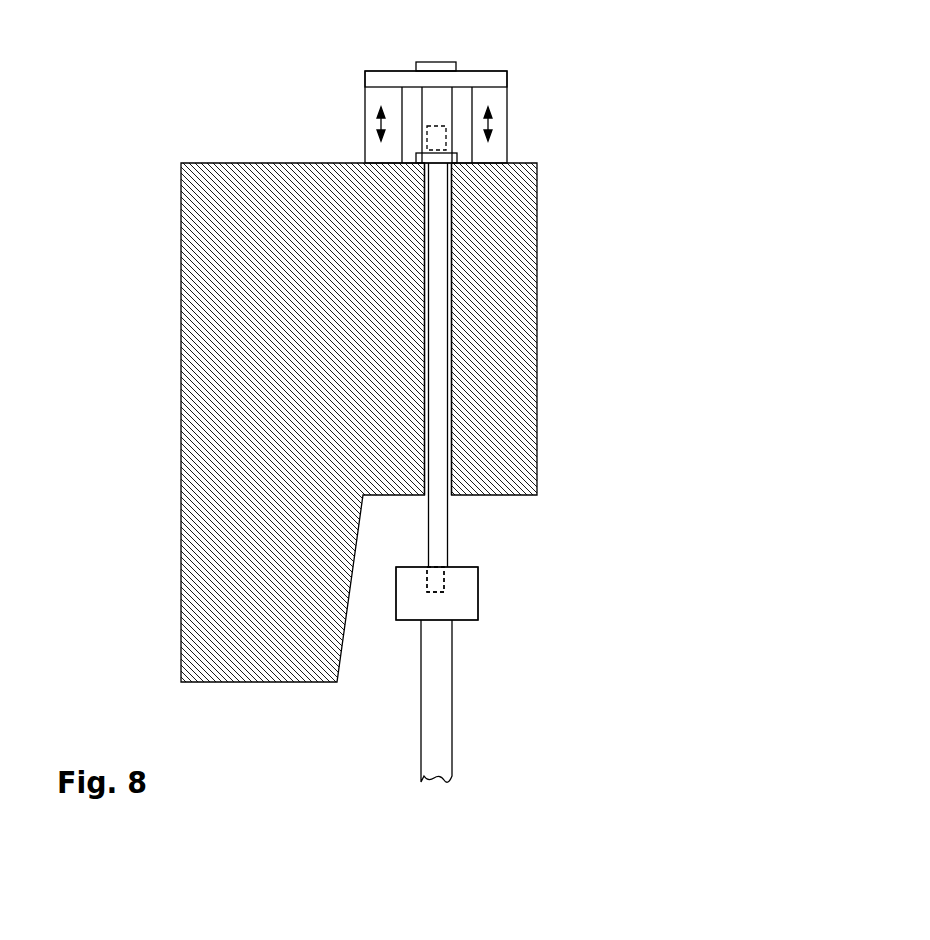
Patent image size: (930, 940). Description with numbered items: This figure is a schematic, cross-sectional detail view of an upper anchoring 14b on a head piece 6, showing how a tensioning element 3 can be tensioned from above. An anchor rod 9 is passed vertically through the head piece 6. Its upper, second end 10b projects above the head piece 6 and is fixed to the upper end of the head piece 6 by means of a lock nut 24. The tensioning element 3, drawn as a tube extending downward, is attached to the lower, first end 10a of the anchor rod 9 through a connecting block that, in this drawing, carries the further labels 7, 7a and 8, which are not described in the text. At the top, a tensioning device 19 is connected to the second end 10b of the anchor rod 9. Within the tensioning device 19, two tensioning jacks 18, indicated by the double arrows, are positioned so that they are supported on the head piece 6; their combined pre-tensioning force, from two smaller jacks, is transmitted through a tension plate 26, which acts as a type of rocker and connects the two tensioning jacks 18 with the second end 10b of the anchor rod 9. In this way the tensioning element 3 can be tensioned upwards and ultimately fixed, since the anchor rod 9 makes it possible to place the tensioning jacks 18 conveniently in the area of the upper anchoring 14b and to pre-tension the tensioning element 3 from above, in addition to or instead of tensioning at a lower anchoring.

The tensioning element 3 is at (445, 737).
The head piece 6 is at (200, 397).
The holder 7 is at (463, 610).
The stop of holder 7a is at (437, 593).
The coupling element 8 is at (445, 582).
The anchor rod 9 is at (435, 400).
The first end of the anchor rod 10a is at (437, 583).
The second end of the anchor rod 10b is at (440, 140).
The upper anchoring 14b is at (472, 175).
The tensioning jacks 18 is at (497, 127).
The tensioning device 19 is at (388, 92).
The lock nut 24 is at (427, 158).
The tension plate 26 is at (477, 79).